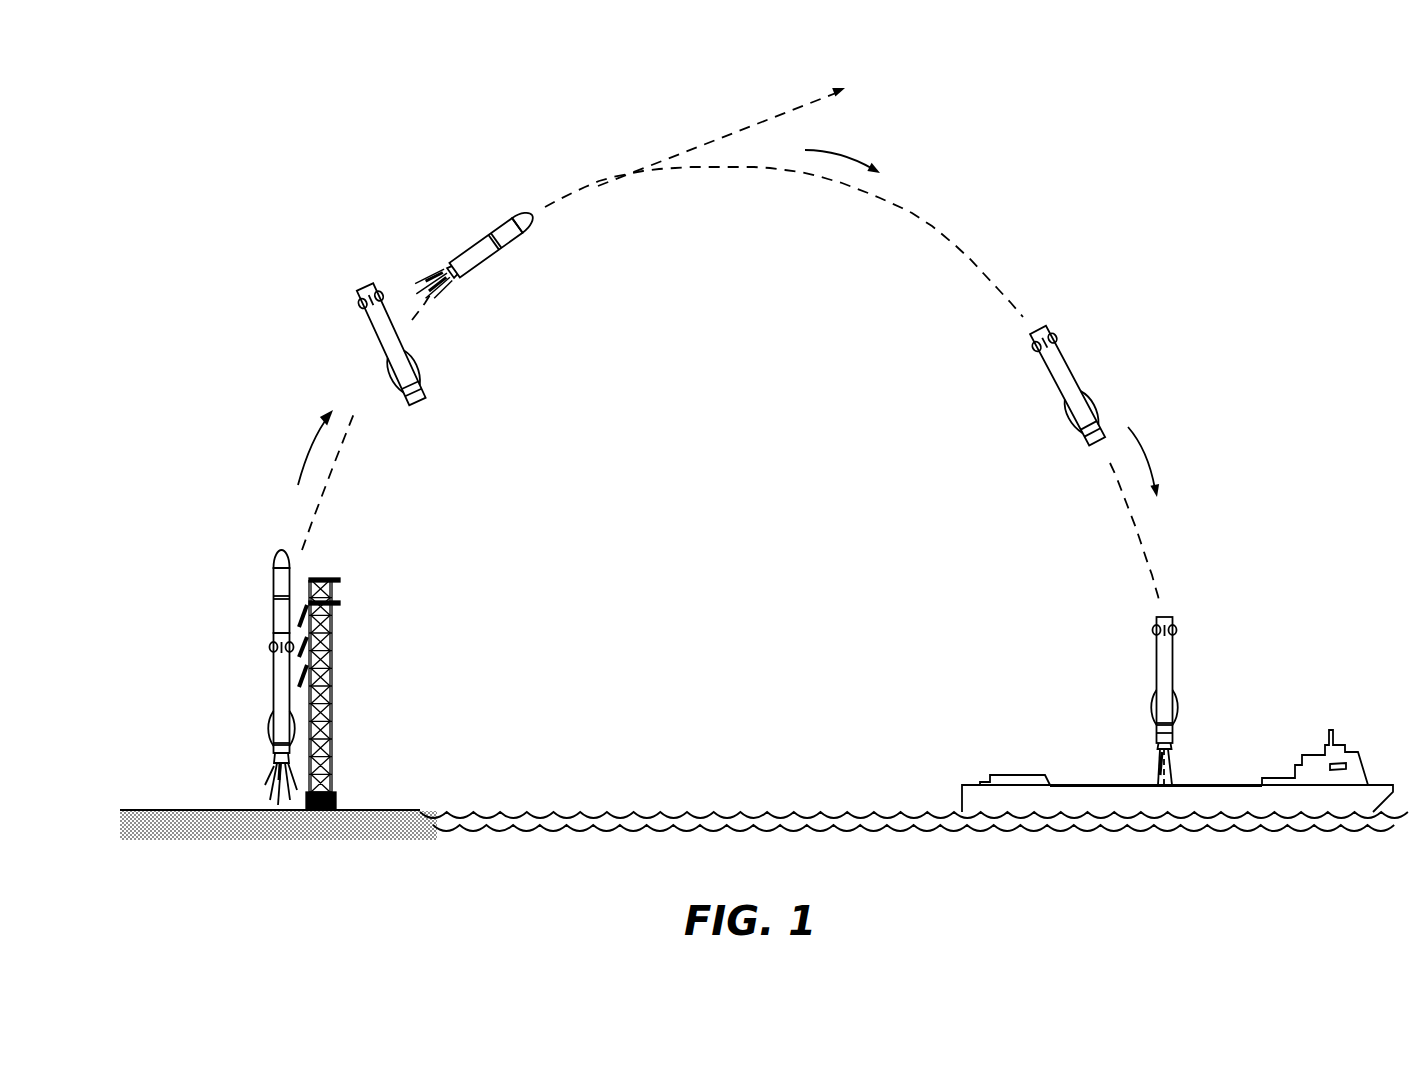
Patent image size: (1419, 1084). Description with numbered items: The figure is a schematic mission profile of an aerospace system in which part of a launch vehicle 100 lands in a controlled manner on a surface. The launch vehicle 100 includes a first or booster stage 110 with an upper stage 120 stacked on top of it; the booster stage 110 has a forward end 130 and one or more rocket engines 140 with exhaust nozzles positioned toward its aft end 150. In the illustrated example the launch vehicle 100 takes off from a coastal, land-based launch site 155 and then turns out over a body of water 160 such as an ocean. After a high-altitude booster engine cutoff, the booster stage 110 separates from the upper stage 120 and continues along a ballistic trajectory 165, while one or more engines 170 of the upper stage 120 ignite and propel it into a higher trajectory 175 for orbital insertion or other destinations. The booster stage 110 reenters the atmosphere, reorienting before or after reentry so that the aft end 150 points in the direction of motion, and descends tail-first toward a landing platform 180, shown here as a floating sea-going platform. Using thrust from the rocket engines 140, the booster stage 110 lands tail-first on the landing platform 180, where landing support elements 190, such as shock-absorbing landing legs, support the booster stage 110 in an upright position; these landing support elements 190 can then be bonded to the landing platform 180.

The launch vehicle 100 is at (247, 563).
The booster stage 110 is at (272, 683).
The upper stage 120 is at (290, 580).
The forward end 130 is at (253, 633).
The rocket engines 140 is at (273, 772).
The aft end 150 is at (259, 759).
The launch site 155 is at (386, 812).
The body of water 160 is at (716, 812).
The ballistic trajectory 165 is at (945, 236).
The engines 170 is at (457, 277).
The higher trajectory 175 is at (752, 122).
The landing platform 180 is at (1310, 755).
The landing support elements 190 is at (1152, 757).